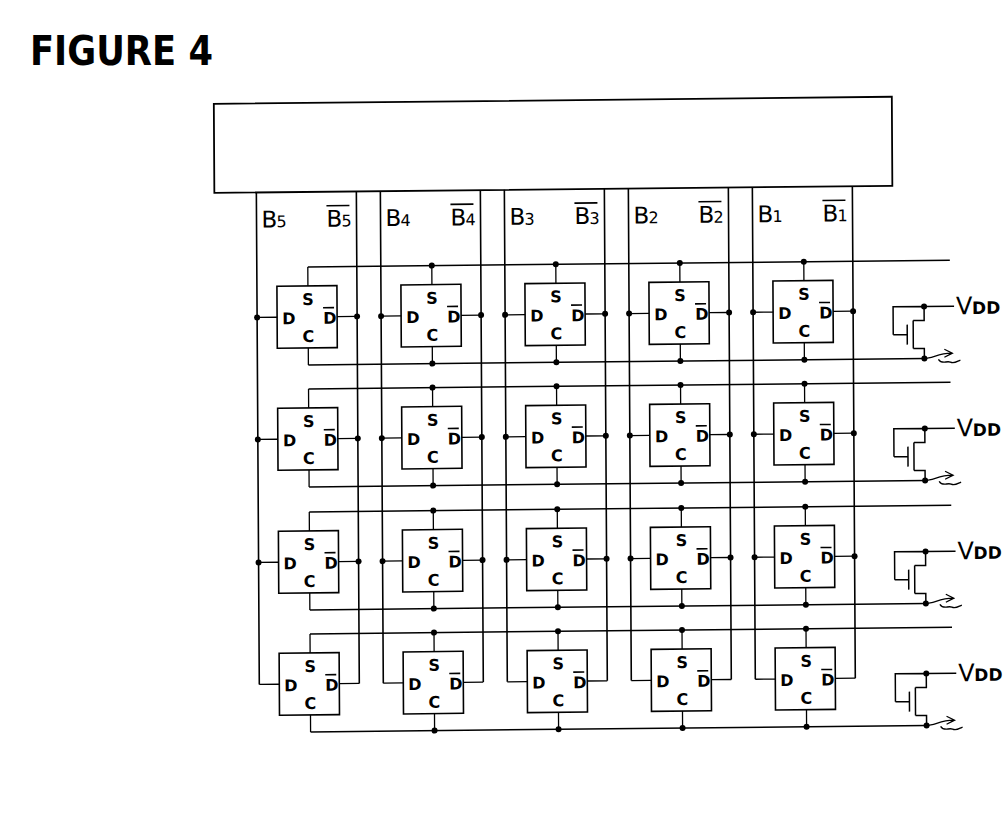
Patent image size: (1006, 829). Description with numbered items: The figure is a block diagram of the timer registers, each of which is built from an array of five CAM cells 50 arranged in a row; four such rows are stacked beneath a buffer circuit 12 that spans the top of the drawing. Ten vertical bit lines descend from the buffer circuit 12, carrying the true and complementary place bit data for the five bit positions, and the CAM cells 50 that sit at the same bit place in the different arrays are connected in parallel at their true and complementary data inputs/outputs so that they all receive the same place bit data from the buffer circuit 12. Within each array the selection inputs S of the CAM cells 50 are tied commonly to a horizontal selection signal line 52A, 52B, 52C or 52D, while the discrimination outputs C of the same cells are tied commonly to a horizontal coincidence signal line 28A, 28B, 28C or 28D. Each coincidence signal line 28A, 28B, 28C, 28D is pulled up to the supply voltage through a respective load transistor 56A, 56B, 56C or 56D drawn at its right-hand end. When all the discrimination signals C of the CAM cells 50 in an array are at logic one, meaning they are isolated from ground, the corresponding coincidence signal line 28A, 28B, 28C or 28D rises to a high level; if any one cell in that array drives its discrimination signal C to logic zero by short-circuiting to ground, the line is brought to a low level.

The buffer circuit 12 is at (848, 97).
The CAM cell 50 is at (277, 302).
The selection signal line 52A is at (950, 634).
The selection signal line 52B is at (950, 512).
The selection signal line 52C is at (950, 389).
The selection signal line 52D is at (950, 267).
The load transistor 56A is at (907, 718).
The load transistor 56B is at (907, 596).
The load transistor 56C is at (907, 473).
The load transistor 56D is at (907, 351).
The coincidence signal line 28A is at (658, 717).
The coincidence signal line 28B is at (658, 595).
The coincidence signal line 28C is at (657, 472).
The coincidence signal line 28D is at (657, 350).